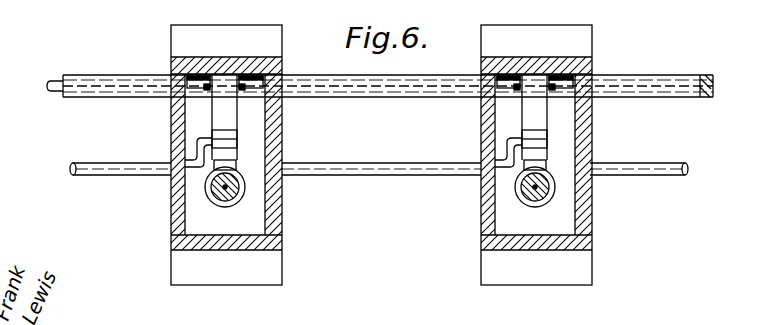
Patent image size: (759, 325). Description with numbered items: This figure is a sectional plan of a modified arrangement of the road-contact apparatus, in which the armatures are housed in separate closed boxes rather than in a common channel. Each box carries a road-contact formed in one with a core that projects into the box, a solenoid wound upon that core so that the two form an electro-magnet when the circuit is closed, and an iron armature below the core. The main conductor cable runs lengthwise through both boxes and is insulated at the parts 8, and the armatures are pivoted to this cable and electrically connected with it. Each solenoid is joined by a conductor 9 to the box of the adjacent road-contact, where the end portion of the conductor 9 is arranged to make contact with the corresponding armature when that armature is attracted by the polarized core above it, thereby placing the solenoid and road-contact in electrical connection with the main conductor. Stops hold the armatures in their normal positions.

The insulated parts 8 is at (312, 92).
The conductor 9 is at (171, 152).